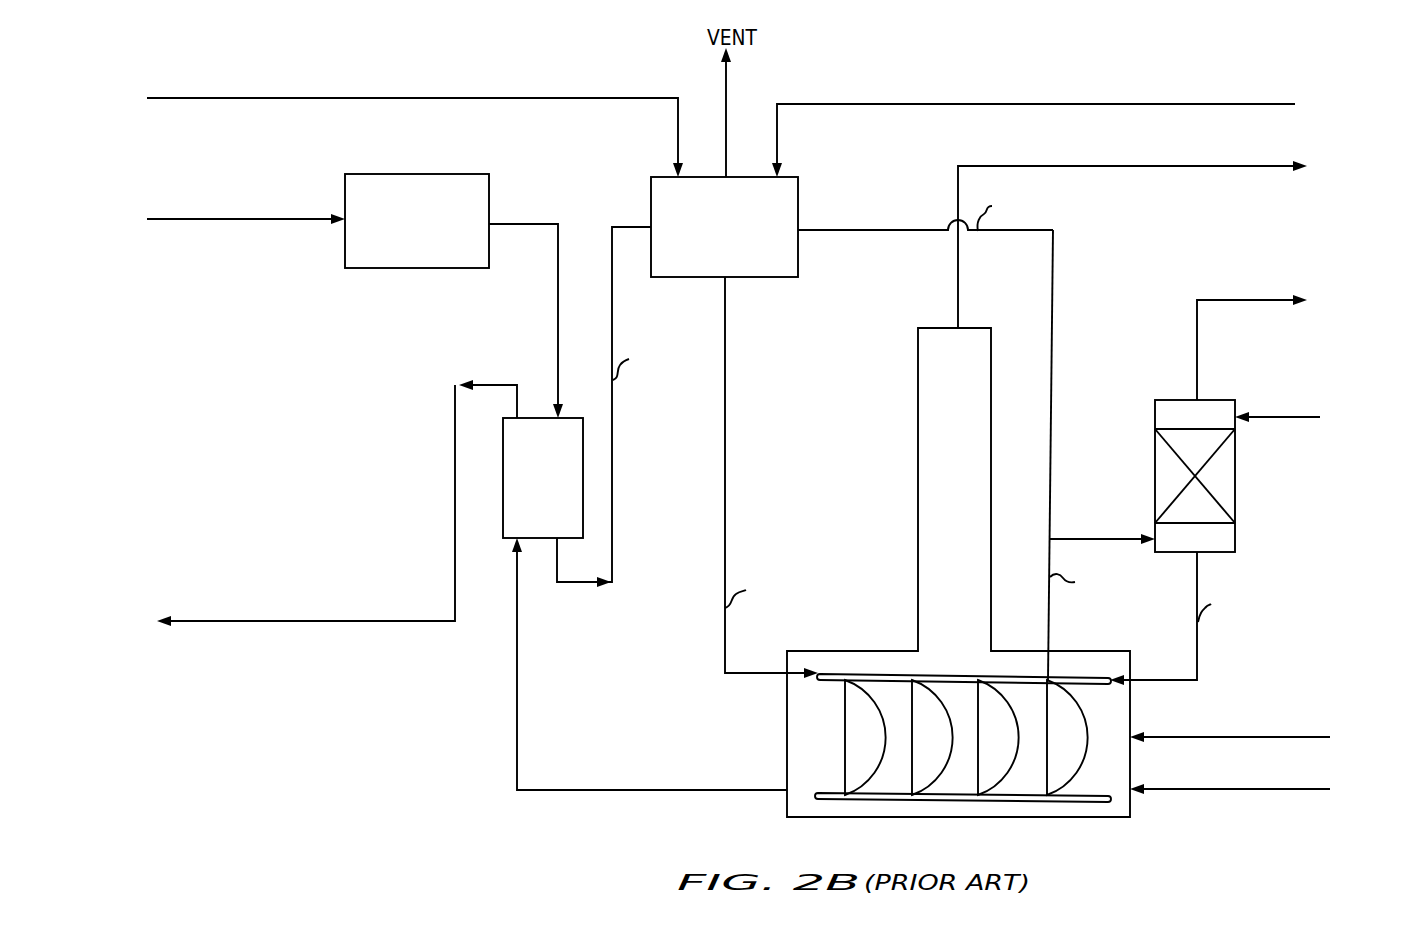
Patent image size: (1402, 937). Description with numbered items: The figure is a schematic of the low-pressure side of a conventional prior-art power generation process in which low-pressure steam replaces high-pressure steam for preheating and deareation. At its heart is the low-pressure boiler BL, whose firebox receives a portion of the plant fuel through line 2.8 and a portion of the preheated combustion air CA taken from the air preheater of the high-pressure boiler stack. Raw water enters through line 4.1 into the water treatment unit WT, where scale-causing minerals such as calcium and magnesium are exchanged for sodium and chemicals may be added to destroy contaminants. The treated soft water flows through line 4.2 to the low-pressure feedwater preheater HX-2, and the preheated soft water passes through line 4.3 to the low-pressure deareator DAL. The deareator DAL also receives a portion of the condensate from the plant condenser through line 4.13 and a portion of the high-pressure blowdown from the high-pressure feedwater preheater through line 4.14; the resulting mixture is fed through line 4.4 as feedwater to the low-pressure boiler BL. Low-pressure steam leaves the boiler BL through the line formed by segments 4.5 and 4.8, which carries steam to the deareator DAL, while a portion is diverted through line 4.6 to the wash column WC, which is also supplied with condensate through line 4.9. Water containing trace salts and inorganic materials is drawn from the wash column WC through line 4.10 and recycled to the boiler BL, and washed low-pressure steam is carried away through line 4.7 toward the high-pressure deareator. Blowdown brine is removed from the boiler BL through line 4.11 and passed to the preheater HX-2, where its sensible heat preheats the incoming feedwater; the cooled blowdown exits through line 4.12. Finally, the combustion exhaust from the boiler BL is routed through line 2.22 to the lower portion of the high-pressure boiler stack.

The water inlet line 4.1 is at (246, 209).
The treated soft water line 4.2 is at (526, 308).
The preheated soft water line 4.3 is at (626, 393).
The feedwater line 4.4 is at (793, 477).
The low-pressure steam line 4.5 is at (1081, 455).
The low-pressure steam line to wash column 4.6 is at (1112, 541).
The washed low-pressure steam line 4.7 is at (1290, 336).
The low-pressure steam line to deareator 4.8 is at (953, 214).
The condensate line 4.9 is at (1313, 417).
The wash water recycle line 4.10 is at (1192, 618).
The blowdown line 4.11 is at (649, 664).
The cooled blowdown line 4.12 is at (333, 503).
The condensate line from condenser 4.13 is at (415, 124).
The high-pressure blowdown line 4.14 is at (1076, 121).
The combustion exhaust line 2.22 is at (1161, 234).
The fuel line 2.8 is at (1258, 783).
The water treatment unit WT is at (439, 174).
The low-pressure deareator DAL is at (724, 227).
The low-pressure feedwater preheater HX-2 is at (543, 478).
The wash column WC is at (1154, 475).
The low-pressure boiler BL is at (1078, 650).
The combustion air CA is at (1247, 736).